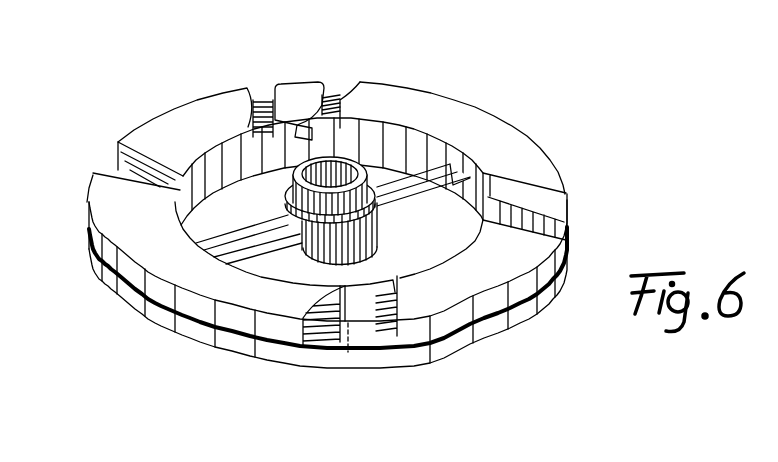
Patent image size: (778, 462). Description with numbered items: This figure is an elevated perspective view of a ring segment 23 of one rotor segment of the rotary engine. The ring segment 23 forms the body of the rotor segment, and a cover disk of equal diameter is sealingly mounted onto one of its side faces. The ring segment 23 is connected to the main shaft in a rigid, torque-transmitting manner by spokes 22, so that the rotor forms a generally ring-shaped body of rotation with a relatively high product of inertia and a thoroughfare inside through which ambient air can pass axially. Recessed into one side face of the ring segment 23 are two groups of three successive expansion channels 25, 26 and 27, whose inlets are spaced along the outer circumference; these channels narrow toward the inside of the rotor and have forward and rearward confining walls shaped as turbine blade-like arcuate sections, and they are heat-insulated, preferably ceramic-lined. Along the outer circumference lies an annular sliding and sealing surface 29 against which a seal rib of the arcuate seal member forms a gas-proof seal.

The spokes 22 is at (408, 175).
The ring segment 23 is at (190, 117).
The expansion channel 25 is at (327, 99).
The expansion channel 26 is at (262, 103).
The expansion channel 27 is at (118, 163).
The annular sliding and sealing surface 29 is at (470, 342).